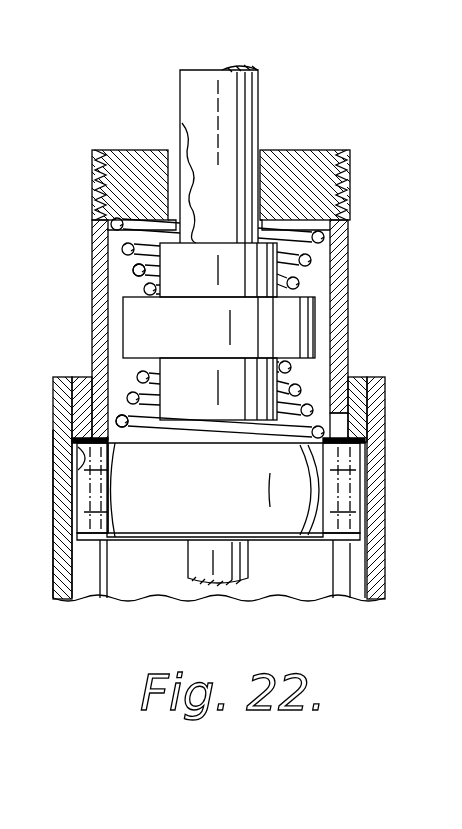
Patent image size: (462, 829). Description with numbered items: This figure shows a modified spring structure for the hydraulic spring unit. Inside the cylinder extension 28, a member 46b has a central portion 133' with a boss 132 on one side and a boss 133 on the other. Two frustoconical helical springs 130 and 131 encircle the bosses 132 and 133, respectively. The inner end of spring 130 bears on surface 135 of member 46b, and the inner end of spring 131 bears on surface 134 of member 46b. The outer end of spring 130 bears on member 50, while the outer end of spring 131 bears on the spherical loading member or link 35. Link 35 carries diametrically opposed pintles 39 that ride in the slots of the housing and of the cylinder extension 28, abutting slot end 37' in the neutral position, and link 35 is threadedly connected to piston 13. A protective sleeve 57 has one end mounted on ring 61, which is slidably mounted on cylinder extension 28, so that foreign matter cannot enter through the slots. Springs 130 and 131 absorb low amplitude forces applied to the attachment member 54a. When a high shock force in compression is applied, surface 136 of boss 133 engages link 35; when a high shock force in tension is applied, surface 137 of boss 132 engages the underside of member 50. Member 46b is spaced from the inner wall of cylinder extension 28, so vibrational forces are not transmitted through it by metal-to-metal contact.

The piston rod 54a is at (212, 33).
The surface of boss 137 is at (182, 123).
The member 50 is at (300, 150).
The cylinder extension 28 is at (350, 288).
The ring 61 is at (80, 377).
The protective sleeve 57 is at (55, 582).
The member 46b is at (130, 306).
The central portion of member 133' is at (164, 327).
The boss 133 is at (218, 372).
The boss 132 is at (118, 241).
The frustoconical helical spring 130 is at (132, 272).
The surface of member 135 is at (232, 295).
The surface of boss 136 is at (187, 423).
The frustoconical helical spring 131 is at (93, 406).
The slot end 37' is at (54, 480).
The surface of member 134 is at (72, 468).
The pintle 39 is at (87, 510).
The spherical loading member or link 35 is at (137, 530).
The piston 13 is at (203, 581).